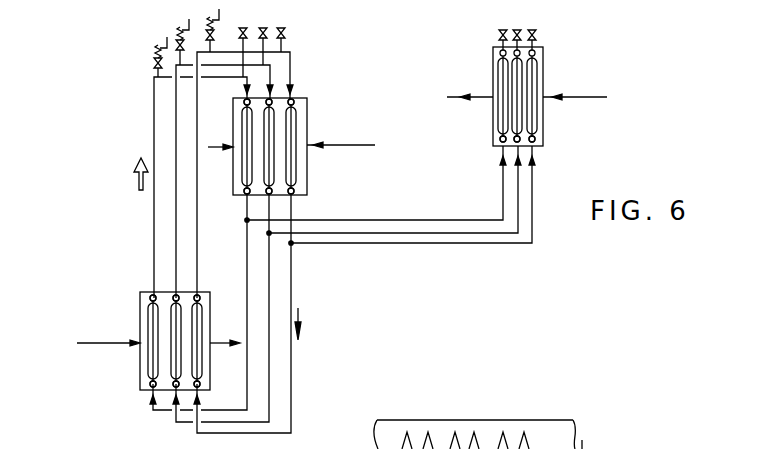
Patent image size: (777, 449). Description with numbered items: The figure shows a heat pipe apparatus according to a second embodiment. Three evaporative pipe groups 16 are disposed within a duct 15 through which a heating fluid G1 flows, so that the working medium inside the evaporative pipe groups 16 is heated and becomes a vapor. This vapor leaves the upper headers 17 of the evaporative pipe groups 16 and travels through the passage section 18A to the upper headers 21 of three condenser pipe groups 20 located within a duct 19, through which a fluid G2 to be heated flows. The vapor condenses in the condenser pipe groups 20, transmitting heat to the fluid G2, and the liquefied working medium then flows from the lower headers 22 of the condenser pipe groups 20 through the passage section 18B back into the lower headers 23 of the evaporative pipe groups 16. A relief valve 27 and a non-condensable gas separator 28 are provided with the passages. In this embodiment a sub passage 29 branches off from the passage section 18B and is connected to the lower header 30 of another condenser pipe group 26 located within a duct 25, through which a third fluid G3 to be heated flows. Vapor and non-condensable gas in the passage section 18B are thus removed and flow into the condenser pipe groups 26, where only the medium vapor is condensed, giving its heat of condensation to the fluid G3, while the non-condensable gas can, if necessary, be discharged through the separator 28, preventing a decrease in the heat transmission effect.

The duct 15 is at (140, 291).
The evaporative pipe group 16 is at (200, 355).
The upper header 17 is at (194, 300).
The lower header 23 is at (194, 387).
The passage section 18A is at (153, 108).
The passage section 18B is at (293, 268).
The duct 19 is at (298, 97).
The condenser pipe group 20 is at (293, 152).
The upper header 21 is at (292, 106).
The lower header 22 is at (293, 194).
The duct 25 is at (493, 47).
The condenser pipe group 26 is at (535, 72).
The relief valve 27 is at (155, 62).
The non-condensable gas separator 28 is at (536, 35).
The sub passage 29 is at (462, 242).
The lower header 30 is at (535, 142).
The heating fluid G1 is at (145, 345).
The fluid to be heated G2 is at (304, 146).
The third fluid to be heated G3 is at (541, 99).